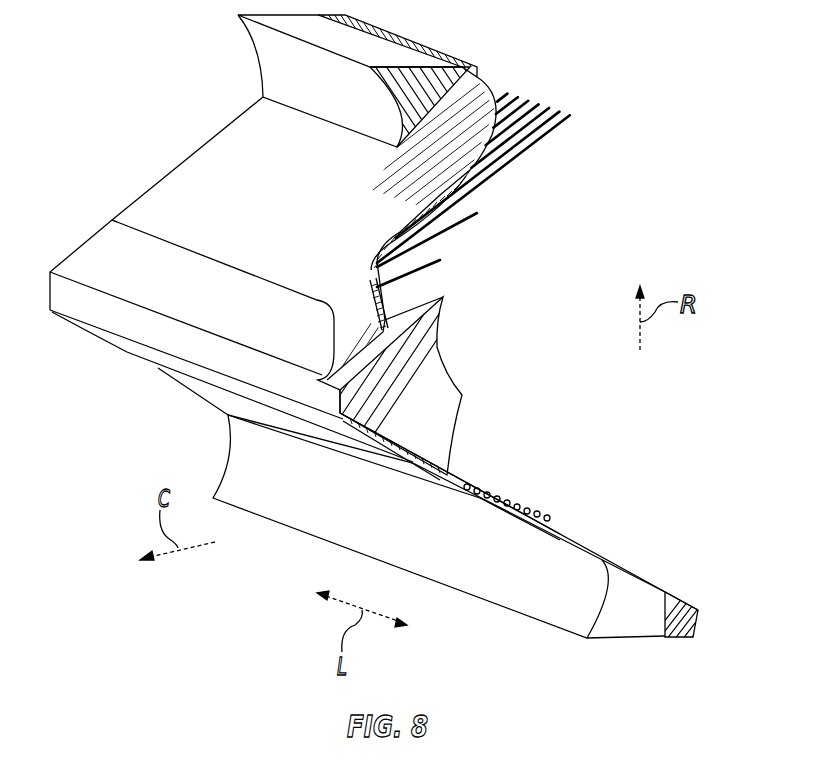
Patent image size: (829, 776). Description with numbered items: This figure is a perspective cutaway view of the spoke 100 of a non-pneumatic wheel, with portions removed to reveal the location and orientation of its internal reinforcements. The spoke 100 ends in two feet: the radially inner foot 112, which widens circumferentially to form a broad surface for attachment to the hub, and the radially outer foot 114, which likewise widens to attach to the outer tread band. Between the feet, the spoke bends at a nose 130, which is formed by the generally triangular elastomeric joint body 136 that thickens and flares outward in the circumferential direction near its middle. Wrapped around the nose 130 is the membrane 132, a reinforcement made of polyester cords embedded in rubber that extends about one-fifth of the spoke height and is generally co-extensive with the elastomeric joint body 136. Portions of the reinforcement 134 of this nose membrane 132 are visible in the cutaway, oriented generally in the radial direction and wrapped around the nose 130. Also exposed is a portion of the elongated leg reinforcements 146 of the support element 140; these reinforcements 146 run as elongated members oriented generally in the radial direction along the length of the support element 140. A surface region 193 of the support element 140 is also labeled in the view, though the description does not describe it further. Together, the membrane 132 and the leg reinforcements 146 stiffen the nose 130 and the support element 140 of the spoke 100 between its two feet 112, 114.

The spoke 100 is at (683, 63).
The radially inner foot 112 is at (637, 617).
The radially outer foot 114 is at (423, 82).
The nose 130 is at (433, 433).
The membrane 132 is at (122, 343).
The reinforcement 134 is at (365, 370).
The elastomeric joint body 136 is at (433, 342).
The support element 140 is at (217, 135).
The elongated leg reinforcements 146 is at (525, 160).
The upper surface 193 is at (195, 186).